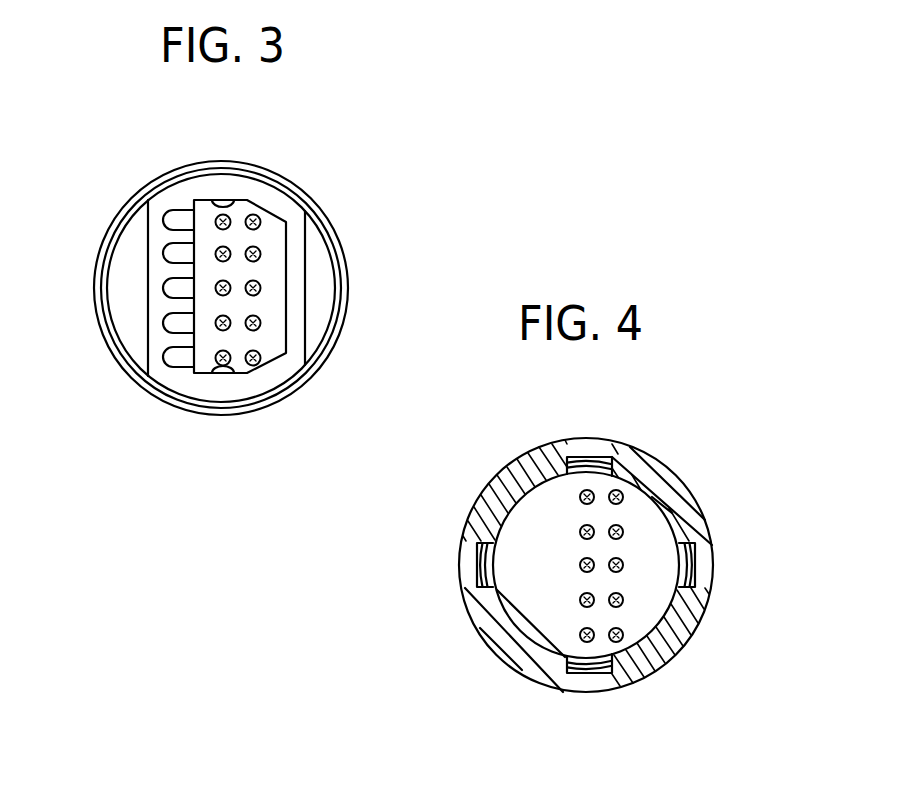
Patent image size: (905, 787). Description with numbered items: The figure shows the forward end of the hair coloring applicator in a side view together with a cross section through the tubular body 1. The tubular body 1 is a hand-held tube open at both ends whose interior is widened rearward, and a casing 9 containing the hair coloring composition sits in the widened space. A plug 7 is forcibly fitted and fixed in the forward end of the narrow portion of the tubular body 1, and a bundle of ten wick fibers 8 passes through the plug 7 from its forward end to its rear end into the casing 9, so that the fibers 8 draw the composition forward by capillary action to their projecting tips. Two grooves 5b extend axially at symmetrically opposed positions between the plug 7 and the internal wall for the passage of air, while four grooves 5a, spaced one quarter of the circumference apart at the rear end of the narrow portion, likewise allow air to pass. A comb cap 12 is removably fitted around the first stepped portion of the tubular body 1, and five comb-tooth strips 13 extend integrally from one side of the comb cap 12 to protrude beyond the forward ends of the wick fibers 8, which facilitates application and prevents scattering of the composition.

In FIG. 3, the tubular body 1 is at (302, 193).
In FIG. 4, the tubular body 1 is at (681, 481).
In FIG. 4, the grooves 5a is at (592, 456).
In FIG. 3, the grooves 5b is at (222, 200).
In FIG. 3, the plug 7 is at (273, 338).
In FIG. 3, the wick fibers 8 is at (253, 253).
In FIG. 4, the wick fibers 8 is at (618, 530).
In FIG. 4, the casing 9 is at (645, 605).
In FIG. 3, the comb cap 12 is at (153, 275).
In FIG. 3, the strips 13 is at (173, 217).